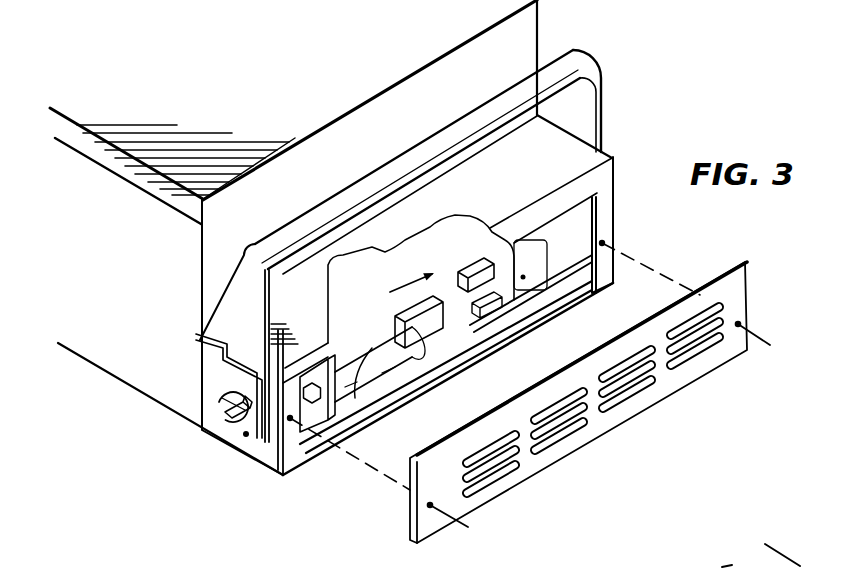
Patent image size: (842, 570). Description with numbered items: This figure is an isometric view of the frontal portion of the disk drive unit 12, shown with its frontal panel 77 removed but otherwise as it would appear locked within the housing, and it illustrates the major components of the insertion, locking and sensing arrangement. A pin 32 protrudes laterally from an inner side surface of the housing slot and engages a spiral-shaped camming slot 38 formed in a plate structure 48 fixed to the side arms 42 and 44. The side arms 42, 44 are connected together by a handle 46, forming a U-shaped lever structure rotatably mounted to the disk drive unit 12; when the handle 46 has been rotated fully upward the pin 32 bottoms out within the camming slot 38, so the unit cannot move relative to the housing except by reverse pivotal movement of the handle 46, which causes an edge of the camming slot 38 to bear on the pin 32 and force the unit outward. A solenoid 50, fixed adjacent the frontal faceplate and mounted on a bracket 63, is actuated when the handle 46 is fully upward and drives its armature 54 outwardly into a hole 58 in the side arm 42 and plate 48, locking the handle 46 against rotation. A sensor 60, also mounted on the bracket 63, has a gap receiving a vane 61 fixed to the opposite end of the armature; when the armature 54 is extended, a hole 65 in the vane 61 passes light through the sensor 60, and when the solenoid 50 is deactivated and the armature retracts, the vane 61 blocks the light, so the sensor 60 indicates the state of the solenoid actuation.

The disk drive unit 12 is at (240, 107).
The pin 32 is at (230, 413).
The camming slot 38 is at (214, 395).
The side arm 42 is at (590, 105).
The side arm 44 is at (238, 273).
The handle 46 is at (396, 162).
The plate structure 48 is at (200, 350).
The solenoid 50 is at (364, 404).
The armature 54 is at (309, 434).
The hole 58 is at (246, 438).
The sensor 60 is at (482, 276).
The vane 61 is at (456, 310).
The bracket 63 is at (488, 338).
The hole 65 is at (518, 296).
The frontal panel 77 is at (752, 288).